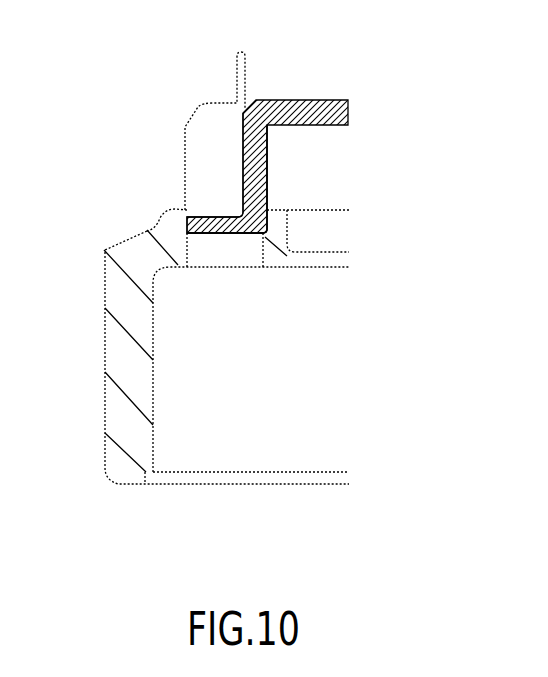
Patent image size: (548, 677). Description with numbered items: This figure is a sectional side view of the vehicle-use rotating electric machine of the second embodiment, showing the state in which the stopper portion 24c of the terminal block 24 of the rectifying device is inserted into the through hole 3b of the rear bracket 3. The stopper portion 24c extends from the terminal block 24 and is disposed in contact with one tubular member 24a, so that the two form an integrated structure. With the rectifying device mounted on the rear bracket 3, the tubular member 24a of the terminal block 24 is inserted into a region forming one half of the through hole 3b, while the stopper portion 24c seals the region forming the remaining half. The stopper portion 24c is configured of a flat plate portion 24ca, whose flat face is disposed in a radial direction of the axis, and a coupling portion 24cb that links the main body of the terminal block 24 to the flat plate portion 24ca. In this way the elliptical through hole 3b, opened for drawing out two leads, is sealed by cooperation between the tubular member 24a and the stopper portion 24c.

The rear bracket 3 is at (137, 295).
The through hole 3b is at (185, 211).
The terminal block 24 is at (300, 100).
The tubular member 24a is at (197, 178).
The stopper portion 24c is at (227, 216).
The flat plate portion 24ca is at (213, 224).
The coupling portion 24cb is at (267, 170).